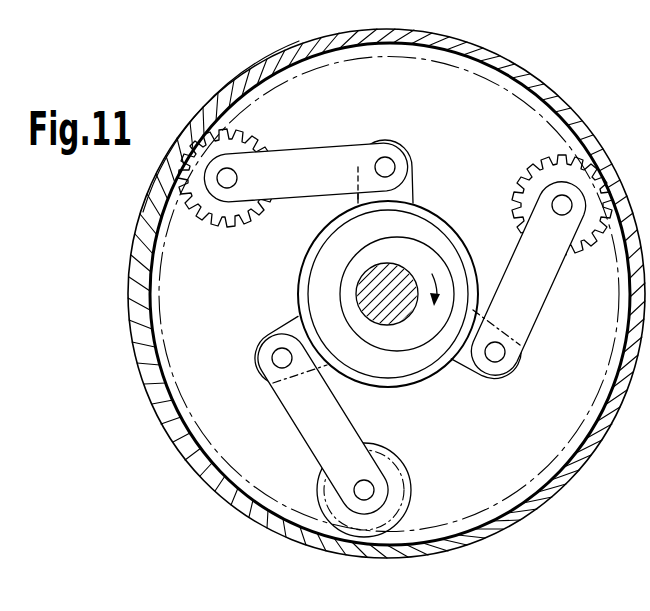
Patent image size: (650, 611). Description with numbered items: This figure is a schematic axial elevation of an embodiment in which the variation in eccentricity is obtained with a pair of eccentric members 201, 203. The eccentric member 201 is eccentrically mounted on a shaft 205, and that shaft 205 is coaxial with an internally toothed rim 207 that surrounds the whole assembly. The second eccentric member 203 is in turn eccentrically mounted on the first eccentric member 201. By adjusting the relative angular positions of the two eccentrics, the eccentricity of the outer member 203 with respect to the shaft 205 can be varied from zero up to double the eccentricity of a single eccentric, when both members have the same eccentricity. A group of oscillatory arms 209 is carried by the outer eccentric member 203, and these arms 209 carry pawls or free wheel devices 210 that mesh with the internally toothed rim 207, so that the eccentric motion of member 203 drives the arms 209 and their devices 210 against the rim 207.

The eccentric member 201 is at (340, 280).
The eccentric member 203 is at (323, 248).
The shaft 205 is at (397, 318).
The internally toothed rim 207 is at (556, 139).
The oscillatory arms 209 is at (303, 437).
The pawls or free wheel devices 210 is at (246, 137).